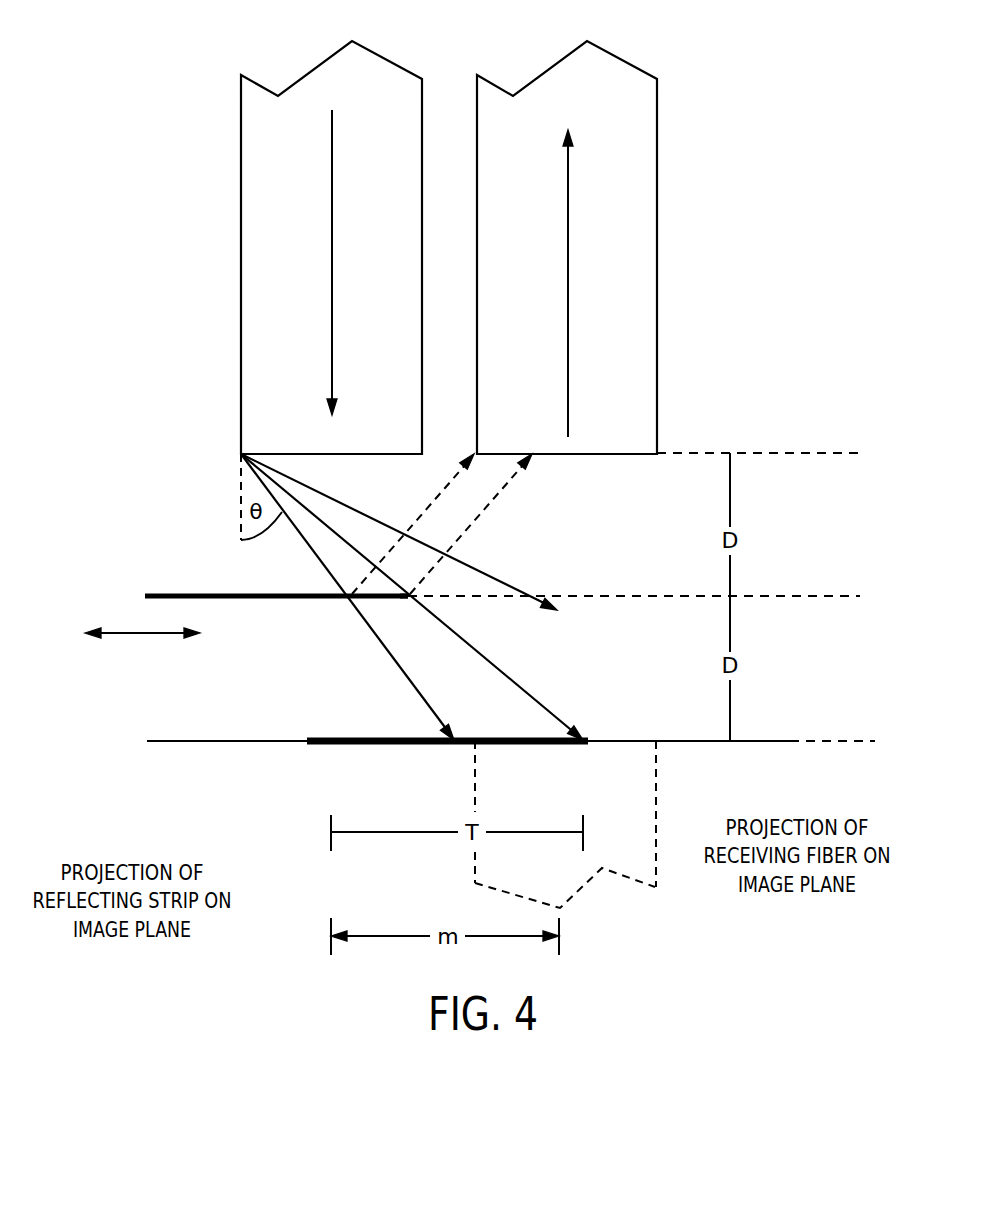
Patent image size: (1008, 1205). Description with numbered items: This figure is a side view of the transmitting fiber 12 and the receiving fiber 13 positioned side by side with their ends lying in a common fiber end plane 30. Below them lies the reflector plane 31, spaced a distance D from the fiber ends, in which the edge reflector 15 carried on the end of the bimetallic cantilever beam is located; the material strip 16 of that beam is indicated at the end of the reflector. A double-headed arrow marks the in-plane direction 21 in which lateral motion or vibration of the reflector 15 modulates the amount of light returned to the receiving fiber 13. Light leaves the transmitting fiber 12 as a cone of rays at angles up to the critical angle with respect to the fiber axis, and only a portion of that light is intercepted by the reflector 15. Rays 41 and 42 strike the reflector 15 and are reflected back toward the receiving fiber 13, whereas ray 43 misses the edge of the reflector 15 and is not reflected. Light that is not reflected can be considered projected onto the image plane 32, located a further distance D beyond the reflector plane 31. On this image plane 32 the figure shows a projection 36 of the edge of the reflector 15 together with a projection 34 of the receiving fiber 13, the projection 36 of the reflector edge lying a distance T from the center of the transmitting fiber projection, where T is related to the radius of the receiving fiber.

The transmitting fiber 12 is at (250, 165).
The receiving fiber 13 is at (643, 180).
The edge reflector 15 is at (263, 600).
The material strip 16 is at (409, 598).
The in-plane direction 21 is at (150, 640).
The fiber end plane 30 is at (817, 453).
The reflector plane 31 is at (817, 596).
The image plane 32 is at (836, 741).
The projection of the receiving fiber 34 is at (646, 888).
The projection of the edge of the reflector 36 is at (580, 746).
The ray 41 is at (312, 548).
The ray 42 is at (353, 548).
The ray 43 is at (505, 584).